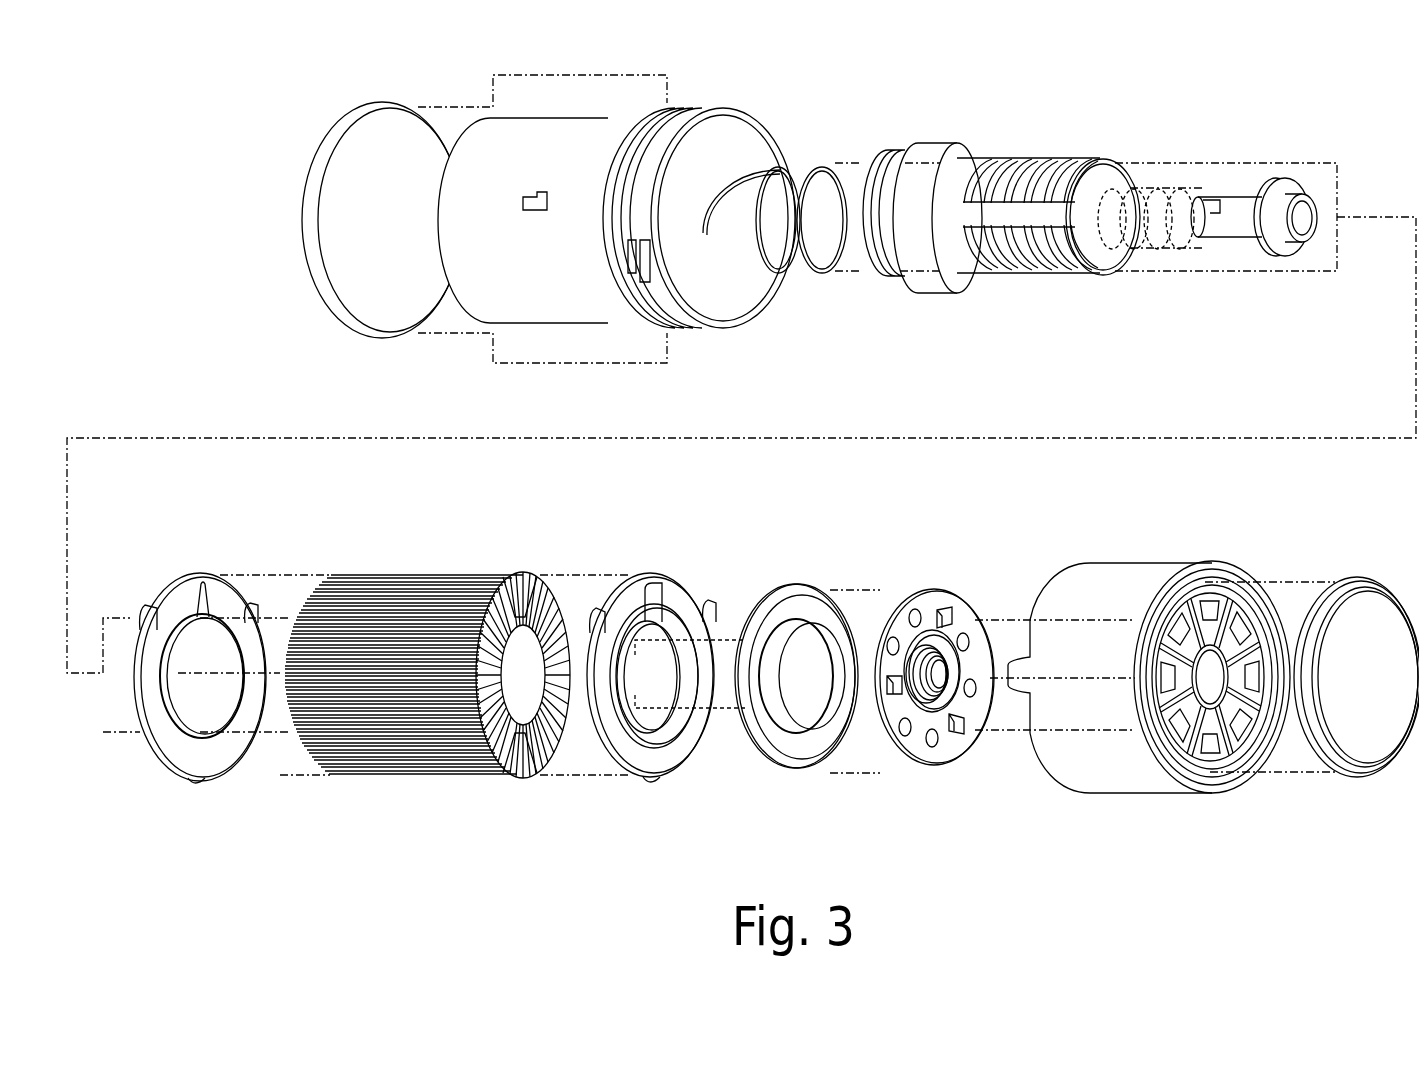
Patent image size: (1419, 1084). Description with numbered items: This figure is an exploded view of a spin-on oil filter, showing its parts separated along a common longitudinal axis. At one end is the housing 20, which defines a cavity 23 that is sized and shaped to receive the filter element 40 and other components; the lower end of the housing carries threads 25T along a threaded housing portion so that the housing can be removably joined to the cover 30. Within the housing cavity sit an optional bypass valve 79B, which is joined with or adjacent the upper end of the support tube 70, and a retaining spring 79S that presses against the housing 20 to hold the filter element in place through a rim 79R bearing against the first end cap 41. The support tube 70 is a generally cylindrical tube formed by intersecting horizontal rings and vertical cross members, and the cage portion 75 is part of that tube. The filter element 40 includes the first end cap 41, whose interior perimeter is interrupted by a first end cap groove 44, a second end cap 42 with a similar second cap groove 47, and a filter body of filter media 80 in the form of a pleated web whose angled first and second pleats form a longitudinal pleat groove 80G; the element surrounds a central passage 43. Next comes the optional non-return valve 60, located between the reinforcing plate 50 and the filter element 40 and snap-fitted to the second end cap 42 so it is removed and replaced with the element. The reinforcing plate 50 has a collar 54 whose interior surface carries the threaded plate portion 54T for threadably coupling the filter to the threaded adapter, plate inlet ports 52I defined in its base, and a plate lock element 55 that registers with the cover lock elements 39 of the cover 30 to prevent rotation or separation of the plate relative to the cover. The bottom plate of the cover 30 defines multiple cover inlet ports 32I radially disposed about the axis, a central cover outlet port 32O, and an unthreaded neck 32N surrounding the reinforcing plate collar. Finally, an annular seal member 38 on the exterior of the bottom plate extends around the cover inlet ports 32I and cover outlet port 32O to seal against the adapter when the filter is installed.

The housing 20 is at (548, 189).
The cavity 23 is at (717, 158).
The threads 25T is at (655, 278).
The retaining spring 79S is at (763, 170).
The support tube 70 is at (1090, 169).
The rim 79R is at (926, 150).
The cage 75 is at (1050, 150).
The bypass valve 79B is at (1265, 188).
The first end cap 41 is at (200, 711).
The first end cap groove 44 is at (206, 590).
The filter element 40 is at (440, 694).
The filter media 80 is at (398, 597).
The longitudinal pleat groove 80G is at (516, 593).
The central passage 43 is at (512, 673).
The second end cap 42 is at (667, 698).
The second cap groove 47 is at (655, 585).
The non-return valve 60 is at (791, 784).
The reinforcing plate 50 is at (953, 701).
The plate inlet ports 52I is at (893, 638).
The collar 54 is at (968, 620).
The threaded plate portion 54T is at (940, 665).
The plate lock element 55 is at (950, 618).
The cover 30 is at (1149, 705).
The cover outlet port 32O is at (1220, 658).
The cover inlet ports 32I is at (1184, 600).
The neck 32N is at (1200, 670).
The cover lock elements 39 is at (1228, 722).
The seal member 38 is at (1378, 578).